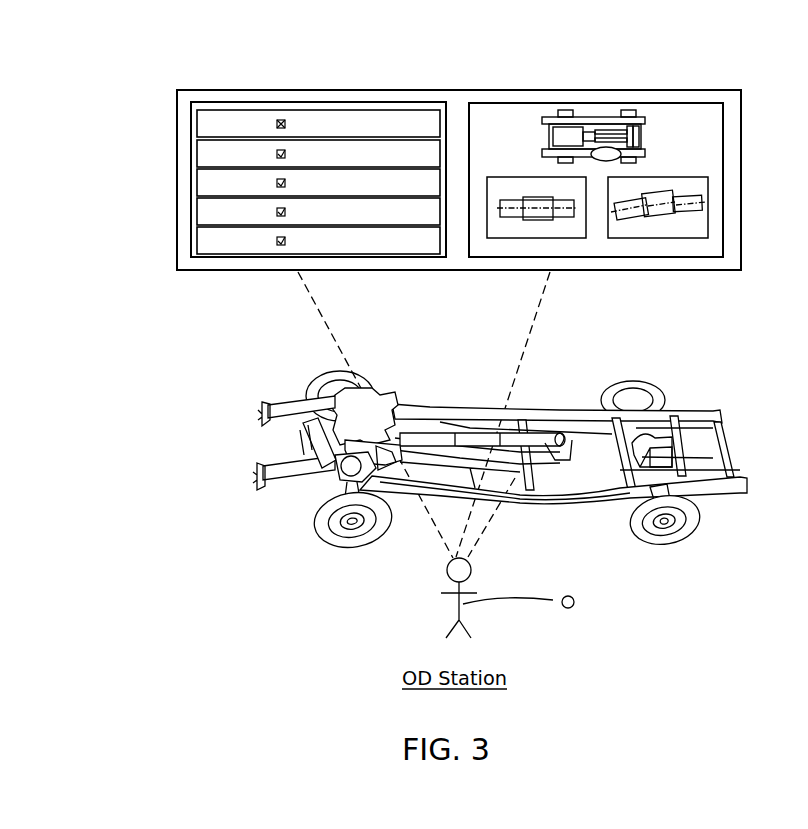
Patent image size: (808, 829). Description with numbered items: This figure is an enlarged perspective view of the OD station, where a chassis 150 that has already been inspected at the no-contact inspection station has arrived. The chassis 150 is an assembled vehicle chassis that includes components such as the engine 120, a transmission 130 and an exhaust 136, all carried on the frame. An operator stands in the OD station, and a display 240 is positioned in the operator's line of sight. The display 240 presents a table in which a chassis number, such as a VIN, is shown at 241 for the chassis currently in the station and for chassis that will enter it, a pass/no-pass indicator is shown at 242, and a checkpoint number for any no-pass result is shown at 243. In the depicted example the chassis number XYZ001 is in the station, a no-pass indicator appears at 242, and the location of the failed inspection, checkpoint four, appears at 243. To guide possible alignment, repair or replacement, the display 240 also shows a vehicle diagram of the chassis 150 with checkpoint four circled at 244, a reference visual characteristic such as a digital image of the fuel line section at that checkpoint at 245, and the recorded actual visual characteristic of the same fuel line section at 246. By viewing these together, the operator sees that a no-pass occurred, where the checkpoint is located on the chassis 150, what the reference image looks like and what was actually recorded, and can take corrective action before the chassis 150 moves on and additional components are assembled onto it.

The engine 120 is at (338, 400).
The transmission 130 is at (417, 415).
The exhaust 136 is at (567, 432).
The chassis 150 is at (517, 435).
The display 240 is at (425, 150).
The chassis number 241 is at (228, 110).
The pass/no-pass indicator 242 is at (281, 110).
The checkpoint number 243 is at (347, 110).
The vehicle diagram 244 is at (612, 110).
The reference visual characteristic 245 is at (519, 176).
The recorded visual characteristic 246 is at (678, 176).